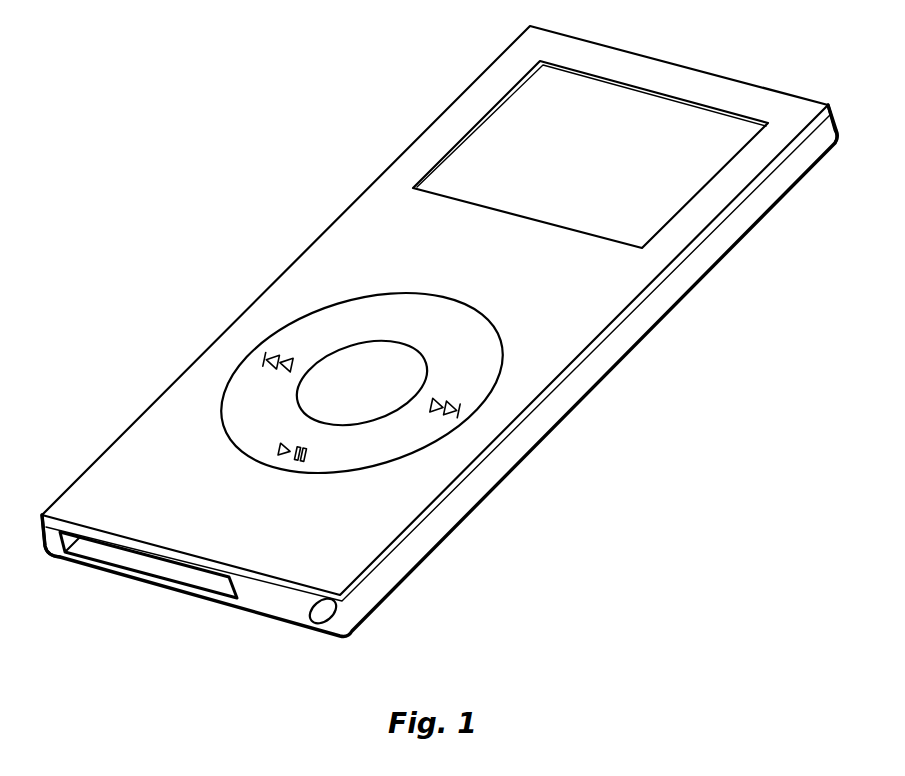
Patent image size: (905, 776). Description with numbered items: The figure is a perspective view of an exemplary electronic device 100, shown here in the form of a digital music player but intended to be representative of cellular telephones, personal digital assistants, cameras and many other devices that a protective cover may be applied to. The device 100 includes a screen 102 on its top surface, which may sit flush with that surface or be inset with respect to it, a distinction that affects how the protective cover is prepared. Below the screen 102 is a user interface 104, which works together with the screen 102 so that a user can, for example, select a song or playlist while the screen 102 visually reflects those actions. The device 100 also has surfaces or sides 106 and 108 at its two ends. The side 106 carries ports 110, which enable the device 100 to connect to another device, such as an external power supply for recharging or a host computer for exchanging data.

The device 100 is at (566, 507).
The screen 102 is at (500, 137).
The user interface 104 is at (315, 332).
The side 106 is at (50, 557).
The side 108 is at (846, 148).
The ports 110 is at (323, 611).